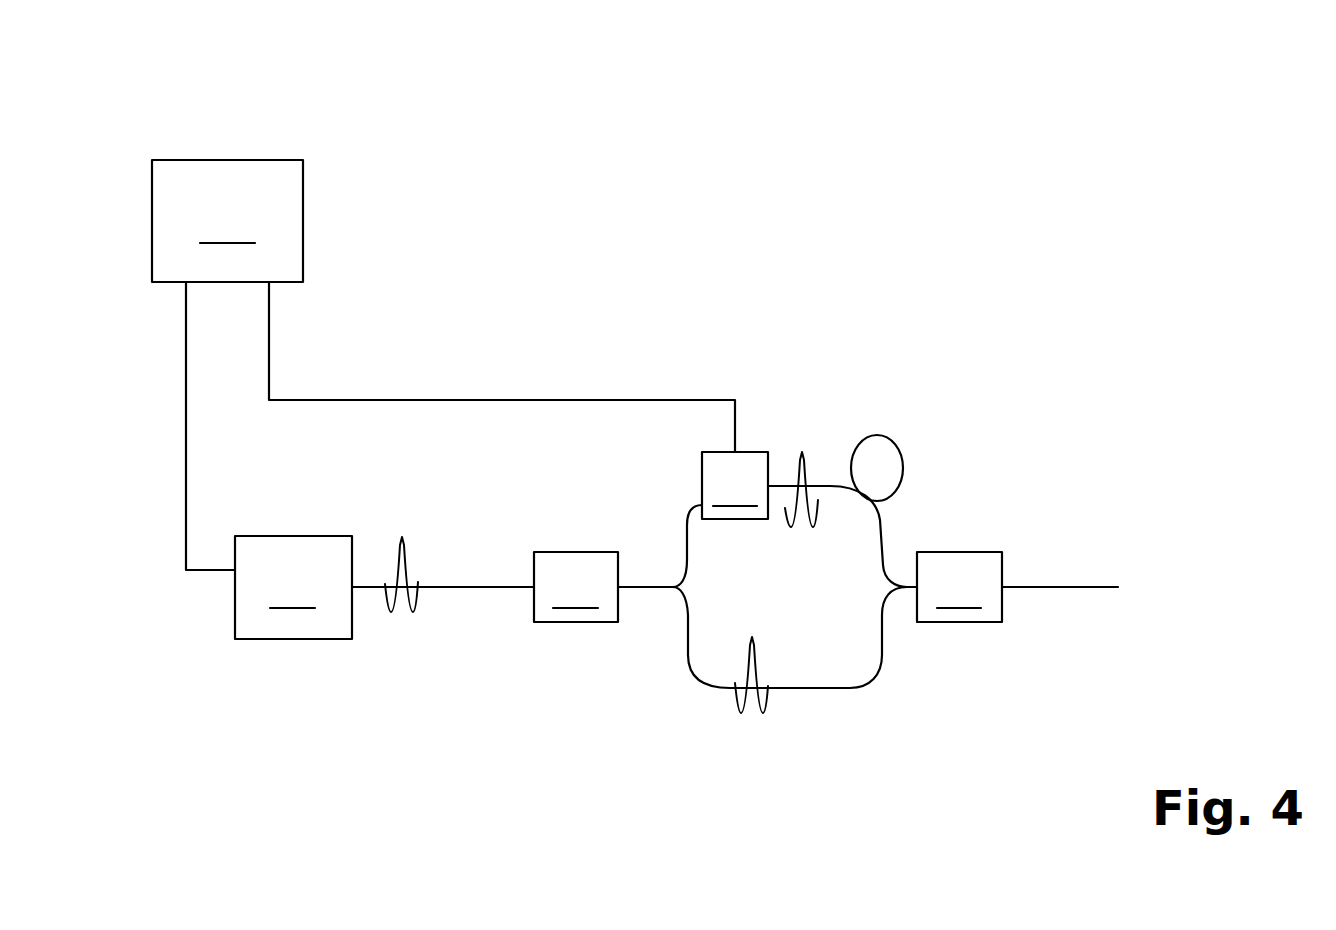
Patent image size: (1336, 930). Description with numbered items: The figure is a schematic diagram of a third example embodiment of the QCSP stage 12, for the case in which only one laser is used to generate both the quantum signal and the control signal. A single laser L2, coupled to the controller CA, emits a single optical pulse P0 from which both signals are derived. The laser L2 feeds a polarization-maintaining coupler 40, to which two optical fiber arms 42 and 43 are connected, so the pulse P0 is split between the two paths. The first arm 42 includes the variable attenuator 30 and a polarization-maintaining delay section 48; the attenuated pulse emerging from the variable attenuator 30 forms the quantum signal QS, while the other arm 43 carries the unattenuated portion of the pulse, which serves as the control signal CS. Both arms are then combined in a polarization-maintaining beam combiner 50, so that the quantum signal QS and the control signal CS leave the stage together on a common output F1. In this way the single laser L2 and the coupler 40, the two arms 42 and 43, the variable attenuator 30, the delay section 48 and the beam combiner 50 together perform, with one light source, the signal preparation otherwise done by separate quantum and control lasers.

The QCSP stage 12 is at (975, 136).
The controller CA is at (227, 221).
The laser L2 is at (293, 587).
The optical pulse P0 is at (403, 552).
The polarization-maintaining coupler 40 is at (576, 587).
The optical fiber arm 43 is at (683, 552).
The variable attenuator 30 is at (735, 485).
The quantum signal QS is at (803, 457).
The polarization-maintaining delay section 48 is at (883, 434).
The optical fiber arm 42 is at (870, 675).
The control signal CS is at (735, 698).
The polarization-maintaining beam combiner 50 is at (959, 587).
The output fiber F1 is at (1068, 587).